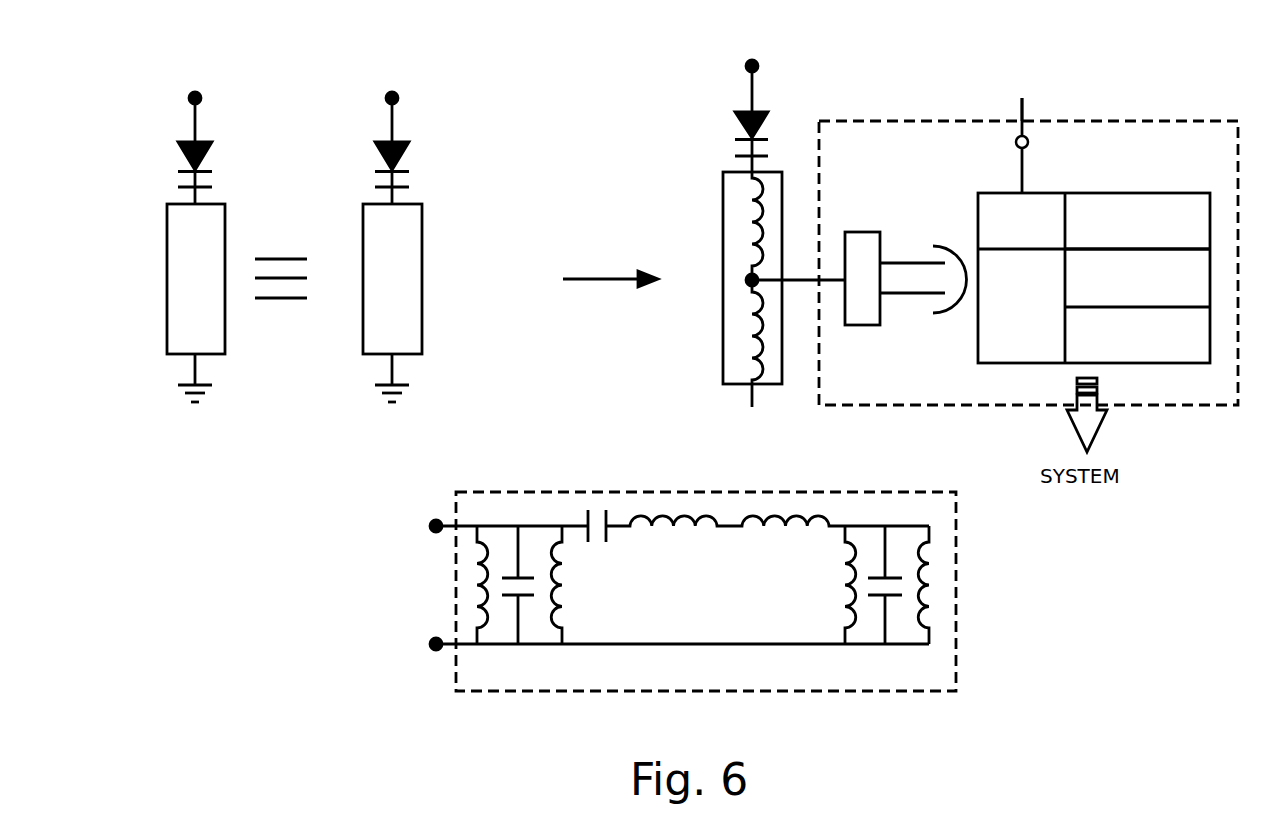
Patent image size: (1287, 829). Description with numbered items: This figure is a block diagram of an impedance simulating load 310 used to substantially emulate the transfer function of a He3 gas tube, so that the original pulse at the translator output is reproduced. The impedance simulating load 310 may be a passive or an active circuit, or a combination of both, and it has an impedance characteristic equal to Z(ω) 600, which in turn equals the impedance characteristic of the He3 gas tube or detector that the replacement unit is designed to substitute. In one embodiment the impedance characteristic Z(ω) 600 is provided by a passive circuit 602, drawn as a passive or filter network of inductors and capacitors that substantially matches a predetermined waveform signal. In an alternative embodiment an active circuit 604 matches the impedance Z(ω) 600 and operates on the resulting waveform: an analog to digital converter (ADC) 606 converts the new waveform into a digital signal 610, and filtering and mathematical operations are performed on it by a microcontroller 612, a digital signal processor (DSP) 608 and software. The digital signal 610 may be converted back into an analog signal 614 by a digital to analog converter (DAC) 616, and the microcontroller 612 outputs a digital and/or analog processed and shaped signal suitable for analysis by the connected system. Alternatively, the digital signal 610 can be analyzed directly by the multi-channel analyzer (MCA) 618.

The impedance simulating load 310 is at (167, 243).
The impedance characteristic Z(ω) 600 is at (438, 212).
The passive circuit 602 is at (790, 692).
The active circuit 604 is at (872, 120).
The analog to digital converter (ADC) 606 is at (867, 232).
The digital signal processor (DSP) 608 is at (1212, 285).
The digital signal 610 is at (915, 252).
The microcontroller 612 is at (1212, 350).
The analog signal 614 is at (1048, 107).
The digital to analog converter (DAC) 616 is at (1030, 193).
The multi-channel analyzer (MCA) 618 is at (1180, 193).